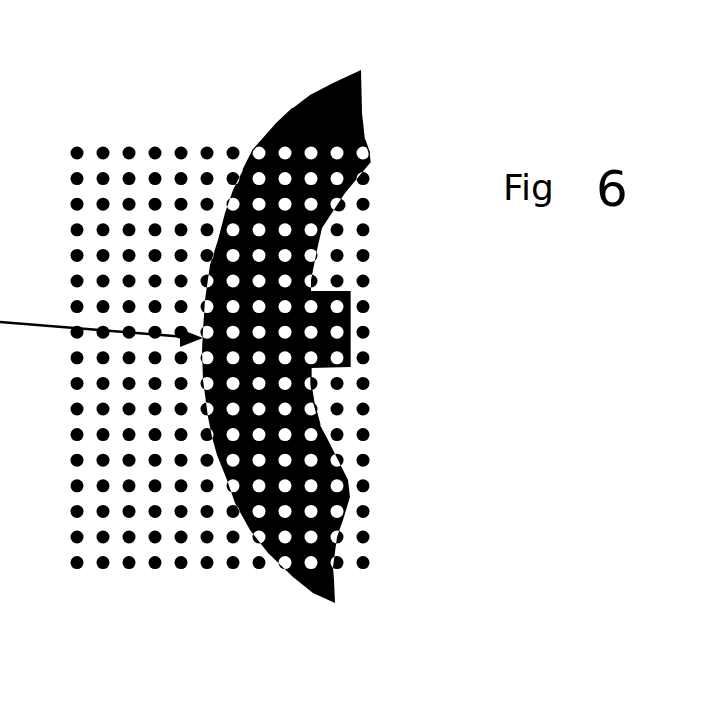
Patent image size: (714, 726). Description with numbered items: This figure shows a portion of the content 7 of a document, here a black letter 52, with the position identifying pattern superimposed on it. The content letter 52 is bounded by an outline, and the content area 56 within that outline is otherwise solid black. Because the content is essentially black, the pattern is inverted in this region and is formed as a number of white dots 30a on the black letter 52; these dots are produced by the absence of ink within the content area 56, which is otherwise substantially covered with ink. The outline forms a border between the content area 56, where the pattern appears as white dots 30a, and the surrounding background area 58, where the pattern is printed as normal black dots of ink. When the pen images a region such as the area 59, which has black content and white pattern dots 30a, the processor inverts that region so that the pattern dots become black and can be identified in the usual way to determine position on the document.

The content 7 is at (293, 108).
The content area 56 is at (257, 148).
The white dots 30a is at (366, 147).
The letter 52 is at (340, 205).
The background area 58 is at (150, 540).
The area 59 is at (333, 387).